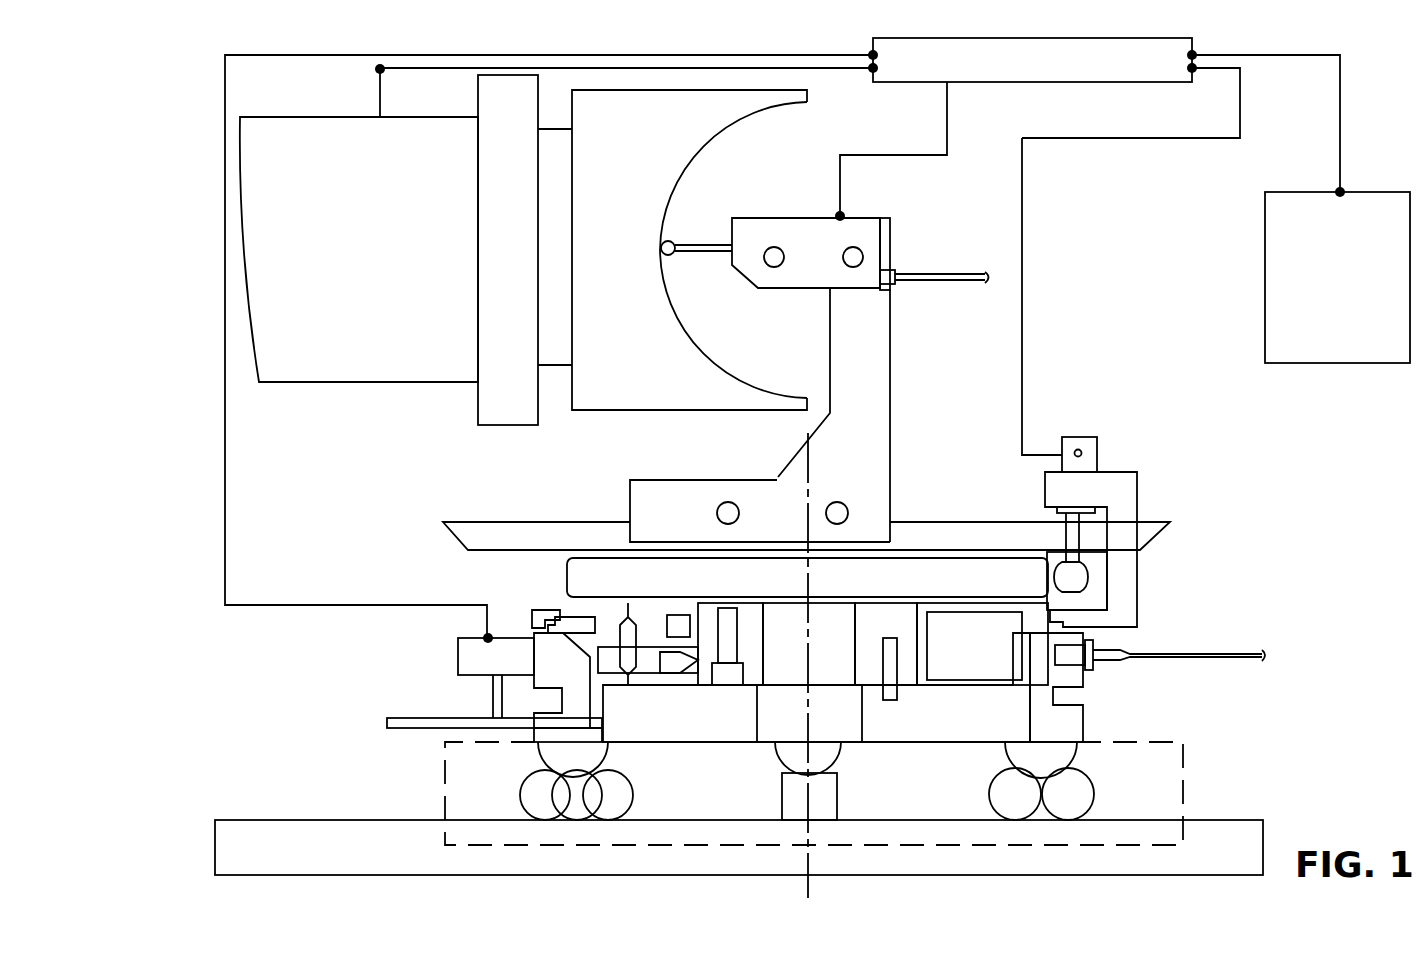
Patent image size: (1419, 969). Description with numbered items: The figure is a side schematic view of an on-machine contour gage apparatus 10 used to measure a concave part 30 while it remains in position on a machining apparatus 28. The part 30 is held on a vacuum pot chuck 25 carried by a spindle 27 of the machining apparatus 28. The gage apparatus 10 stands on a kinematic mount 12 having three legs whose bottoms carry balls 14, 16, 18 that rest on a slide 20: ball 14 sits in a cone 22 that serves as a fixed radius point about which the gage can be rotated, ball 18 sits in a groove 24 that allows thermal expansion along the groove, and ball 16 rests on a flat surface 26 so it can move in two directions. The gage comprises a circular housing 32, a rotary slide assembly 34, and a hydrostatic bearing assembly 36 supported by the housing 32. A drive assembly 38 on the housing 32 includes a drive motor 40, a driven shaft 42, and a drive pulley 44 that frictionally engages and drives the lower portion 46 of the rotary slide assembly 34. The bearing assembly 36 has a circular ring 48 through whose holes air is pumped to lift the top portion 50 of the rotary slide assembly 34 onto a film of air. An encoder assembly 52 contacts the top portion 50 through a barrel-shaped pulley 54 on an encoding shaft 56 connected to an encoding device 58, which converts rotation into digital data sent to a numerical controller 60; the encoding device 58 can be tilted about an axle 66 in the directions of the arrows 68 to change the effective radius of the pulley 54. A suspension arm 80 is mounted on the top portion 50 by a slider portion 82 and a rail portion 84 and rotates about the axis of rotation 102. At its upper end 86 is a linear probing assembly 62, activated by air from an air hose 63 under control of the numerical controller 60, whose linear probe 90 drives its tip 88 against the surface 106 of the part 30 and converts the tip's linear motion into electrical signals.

The on-machine contour gage apparatus 10 is at (378, 476).
The kinematic mount 12 is at (1183, 753).
The ball 14 is at (545, 752).
The ball 16 is at (775, 748).
The ball 18 is at (1005, 750).
The slide 20 is at (1225, 830).
The cone 22 is at (495, 800).
The groove 24 is at (1055, 772).
The vacuum pot chuck 25 is at (660, 400).
The flat surface 26 is at (827, 773).
The spindle 27 is at (493, 403).
The machining apparatus 28 is at (362, 108).
The part 30 is at (720, 108).
The circular housing 32 is at (1053, 703).
The rotary slide assembly 34 is at (487, 572).
The hydrostatic bearing assembly 36 is at (1140, 640).
The drive assembly 38 is at (452, 628).
The drive motor 40 is at (455, 658).
The driven shaft 42 is at (490, 682).
The drive pulley 44 is at (440, 724).
The lower portion of the rotary slide assembly 46 is at (660, 730).
The circular ring 48 is at (1012, 625).
The top portion of the rotary slide assembly 50 is at (590, 586).
The encoder assembly 52 is at (1157, 497).
The barrel-shaped pulley 54 is at (1080, 582).
The encoding shaft 56 is at (1070, 537).
The encoding device 58 is at (1090, 462).
The numerical controller 60 is at (1150, 82).
The linear probing assembly 62 is at (858, 210).
The air hose 63 is at (950, 275).
The axle 66 is at (1085, 452).
The arrows 68 is at (1045, 442).
The suspension arm 80 is at (880, 440).
The slider portion 82 is at (662, 492).
The rail portion 84 is at (505, 522).
The upper end of the suspension arm 86 is at (890, 238).
The tip 88 is at (668, 242).
The linear probe 90 is at (700, 252).
The axis of rotation 102 is at (808, 890).
The surface 106 is at (685, 338).